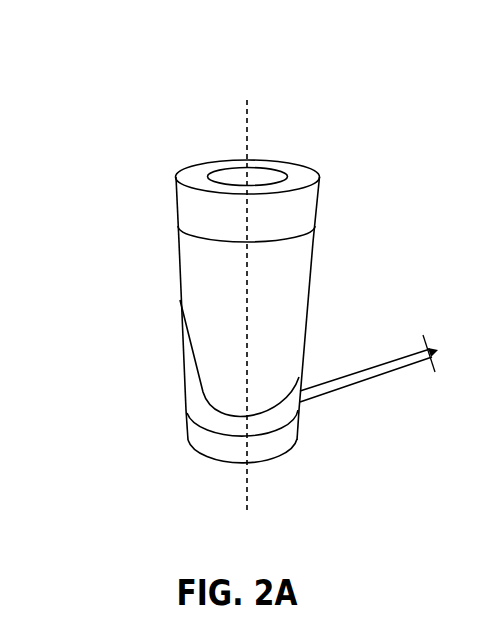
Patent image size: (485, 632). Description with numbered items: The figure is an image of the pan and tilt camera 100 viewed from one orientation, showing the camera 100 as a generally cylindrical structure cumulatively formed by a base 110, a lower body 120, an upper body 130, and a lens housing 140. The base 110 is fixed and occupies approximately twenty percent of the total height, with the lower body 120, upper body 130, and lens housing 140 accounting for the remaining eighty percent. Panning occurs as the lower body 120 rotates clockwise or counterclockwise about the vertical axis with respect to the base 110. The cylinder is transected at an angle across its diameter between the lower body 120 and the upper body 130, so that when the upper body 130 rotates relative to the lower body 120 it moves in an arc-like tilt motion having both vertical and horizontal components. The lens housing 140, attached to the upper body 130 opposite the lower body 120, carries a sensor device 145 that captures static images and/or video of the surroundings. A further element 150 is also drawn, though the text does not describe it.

The pan and tilt camera 100 is at (143, 45).
The base 110 is at (190, 445).
The lower body 120 is at (187, 383).
The upper body 130 is at (200, 307).
The lens housing 140 is at (185, 210).
The sensor device 145 is at (268, 175).
The needle / spout 150 is at (372, 382).